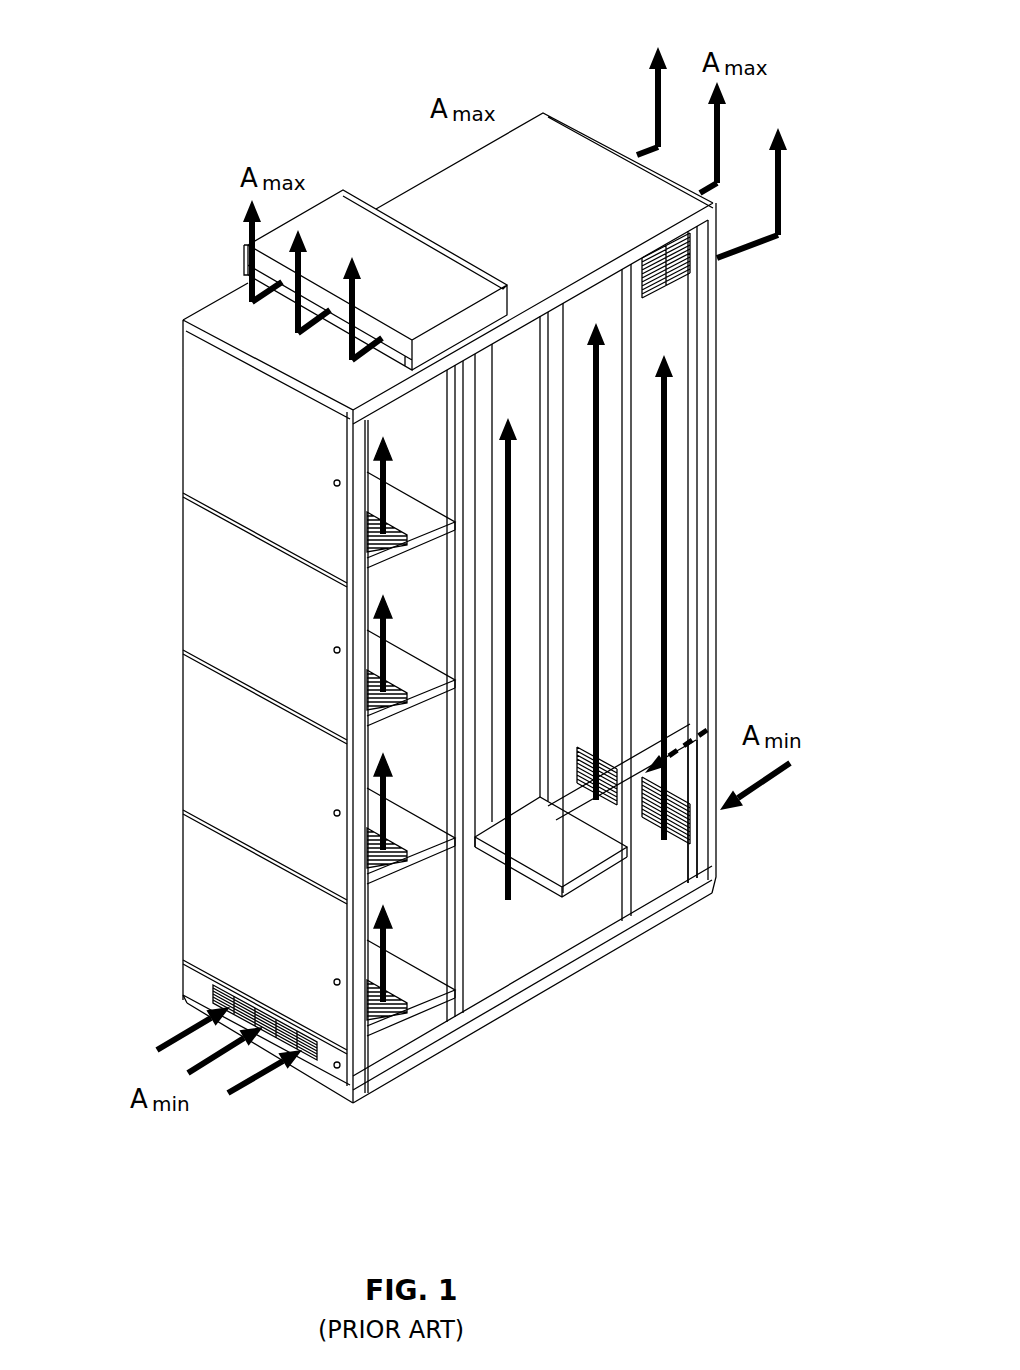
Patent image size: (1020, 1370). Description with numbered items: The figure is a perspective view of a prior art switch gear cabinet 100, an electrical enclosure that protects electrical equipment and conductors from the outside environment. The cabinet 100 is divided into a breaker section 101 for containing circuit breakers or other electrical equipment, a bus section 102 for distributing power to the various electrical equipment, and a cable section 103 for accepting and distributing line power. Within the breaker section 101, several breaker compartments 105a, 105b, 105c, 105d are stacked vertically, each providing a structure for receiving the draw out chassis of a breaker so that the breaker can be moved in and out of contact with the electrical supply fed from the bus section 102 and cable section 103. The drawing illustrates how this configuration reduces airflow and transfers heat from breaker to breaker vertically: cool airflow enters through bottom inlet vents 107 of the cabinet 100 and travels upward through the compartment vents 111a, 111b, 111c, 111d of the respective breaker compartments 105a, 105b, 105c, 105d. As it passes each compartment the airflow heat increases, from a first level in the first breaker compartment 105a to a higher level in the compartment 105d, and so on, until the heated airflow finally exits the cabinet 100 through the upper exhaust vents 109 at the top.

The switch gear cabinet 100 is at (183, 101).
The breaker section 101 is at (430, 1062).
The bus section 102 is at (567, 986).
The cable section 103 is at (665, 925).
The first breaker compartment 105a is at (365, 968).
The breaker compartment 105b is at (365, 816).
The breaker compartment 105c is at (365, 658).
The breaker compartment 105d is at (365, 500).
The bottom inlet vents 107 is at (305, 1057).
The upper exhaust vents 109 is at (246, 257).
The compartment vent 111a is at (376, 1020).
The compartment vent 111b is at (376, 868).
The compartment vent 111c is at (376, 710).
The compartment vent 111d is at (376, 552).